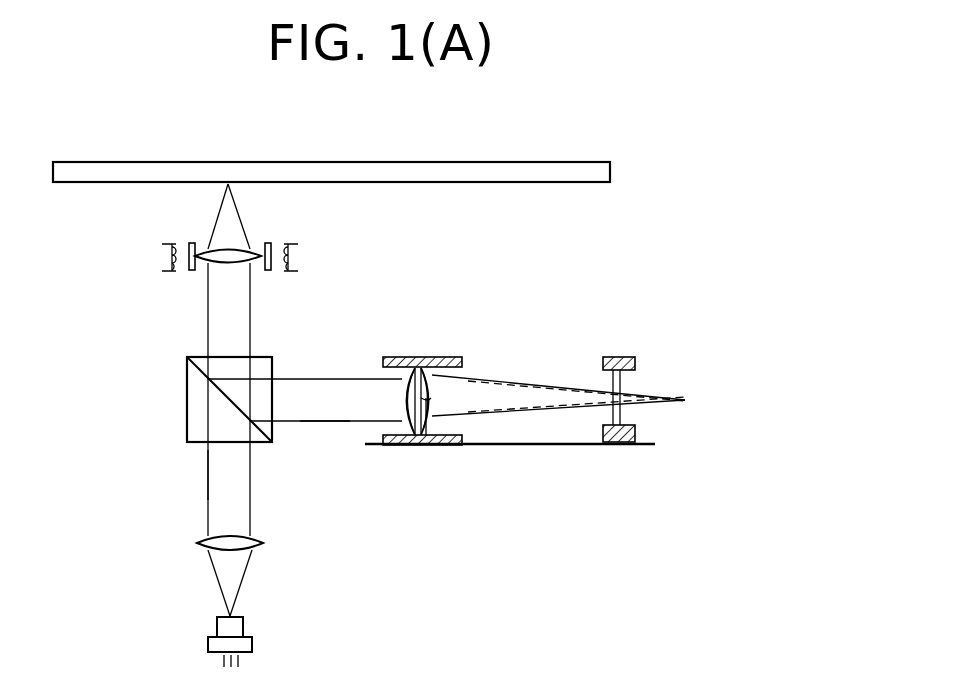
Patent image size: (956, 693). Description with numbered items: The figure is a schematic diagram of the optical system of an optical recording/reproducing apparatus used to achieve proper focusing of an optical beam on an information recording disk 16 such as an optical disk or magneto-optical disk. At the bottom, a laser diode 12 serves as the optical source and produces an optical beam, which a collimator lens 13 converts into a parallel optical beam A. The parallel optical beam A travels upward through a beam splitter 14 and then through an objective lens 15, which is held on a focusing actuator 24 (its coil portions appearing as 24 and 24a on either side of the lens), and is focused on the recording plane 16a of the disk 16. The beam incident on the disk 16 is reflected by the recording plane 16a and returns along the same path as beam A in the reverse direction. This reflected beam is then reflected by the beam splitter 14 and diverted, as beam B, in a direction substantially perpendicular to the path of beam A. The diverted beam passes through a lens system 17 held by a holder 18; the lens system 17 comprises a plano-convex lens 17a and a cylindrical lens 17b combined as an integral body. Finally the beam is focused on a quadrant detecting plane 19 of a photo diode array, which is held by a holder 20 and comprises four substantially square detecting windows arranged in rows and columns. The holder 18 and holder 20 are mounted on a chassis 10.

The chassis 10 is at (494, 448).
The laser diode 12 is at (243, 627).
The collimator lens 13 is at (263, 546).
The beam splitter 14 is at (195, 391).
The objective lens 15 is at (250, 263).
The information recording disk 16 is at (508, 160).
The recording plane 16a is at (380, 184).
The lens system 17 is at (392, 398).
The plano-convex lens 17a is at (410, 362).
The cylindrical lens 17b is at (428, 360).
The holder 18 is at (466, 362).
The quadrant detecting plane 19 is at (608, 415).
The holder 20 is at (600, 356).
The focusing actuator 24 is at (300, 254).
The focusing coil 24a is at (162, 250).
The parallel optical beam A is at (206, 476).
The beam B is at (322, 425).